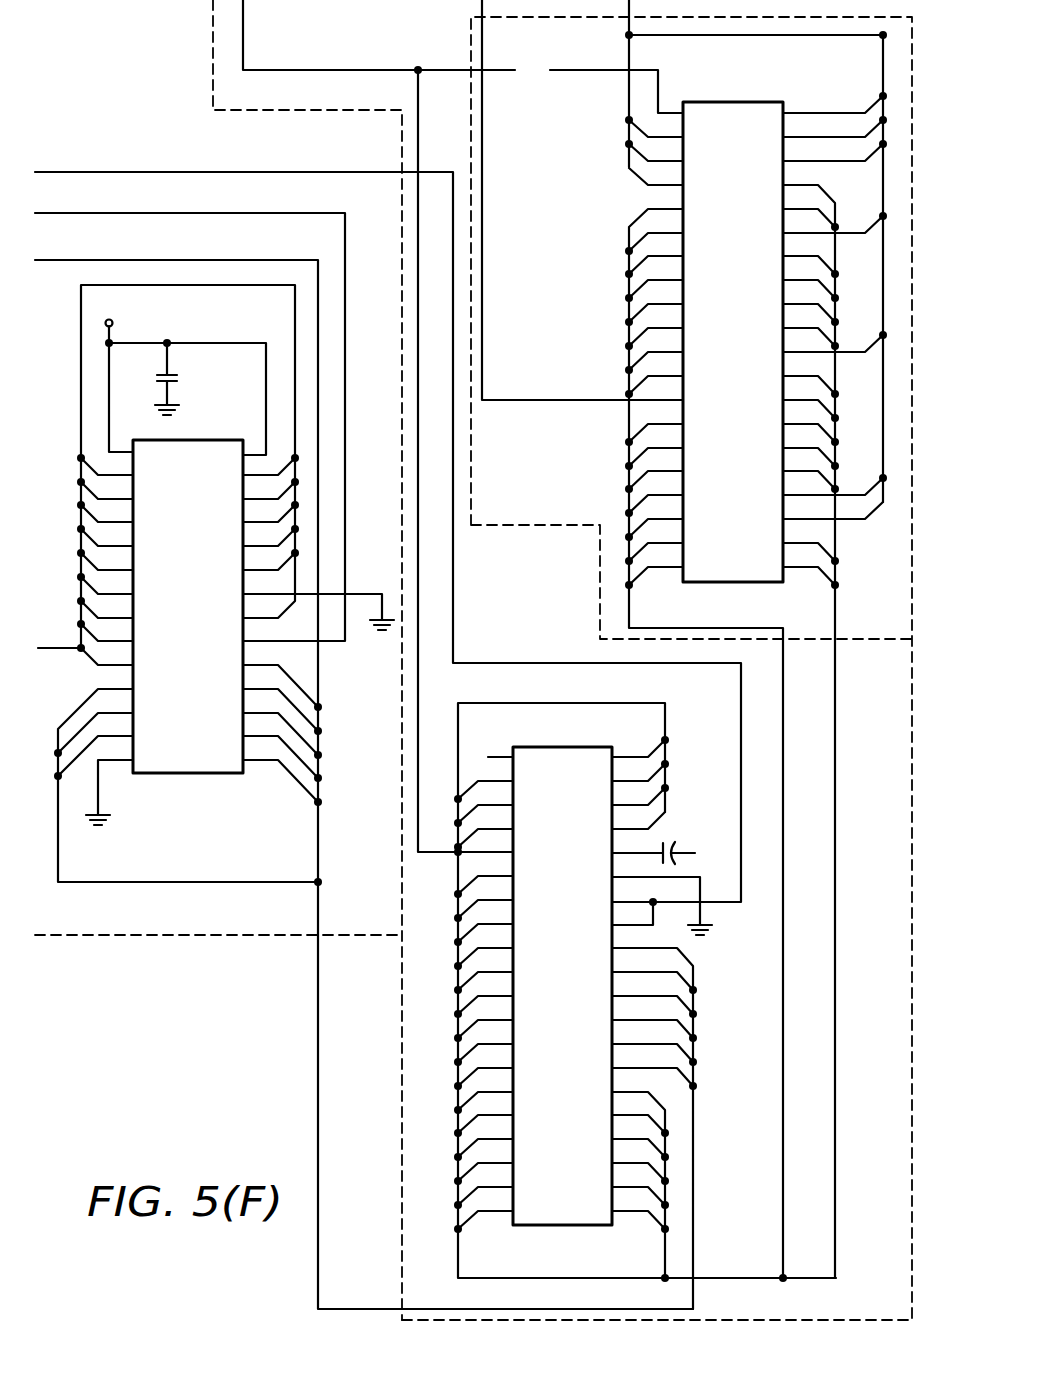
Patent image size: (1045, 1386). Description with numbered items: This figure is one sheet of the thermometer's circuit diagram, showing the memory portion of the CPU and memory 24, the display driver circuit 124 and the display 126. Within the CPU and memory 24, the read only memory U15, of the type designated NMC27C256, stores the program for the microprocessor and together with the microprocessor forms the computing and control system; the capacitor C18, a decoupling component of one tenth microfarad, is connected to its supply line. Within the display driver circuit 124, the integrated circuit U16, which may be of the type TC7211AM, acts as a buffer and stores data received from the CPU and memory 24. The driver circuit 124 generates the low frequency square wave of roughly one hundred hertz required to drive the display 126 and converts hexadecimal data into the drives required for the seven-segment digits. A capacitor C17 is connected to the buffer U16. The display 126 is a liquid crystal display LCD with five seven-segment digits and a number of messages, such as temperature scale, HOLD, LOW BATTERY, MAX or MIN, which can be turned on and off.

The computing and control system CPU 24 is at (218, 660).
The liquid crystal display 126 is at (657, 668).
The display driver circuit 124 is at (645, 931).
The read only memory (ROM) U15 is at (175, 773).
The buffer U16 is at (553, 1225).
The capacitor C18 is at (180, 380).
The capacitor C17 is at (673, 844).
The liquid crystal display LCD is at (742, 102).